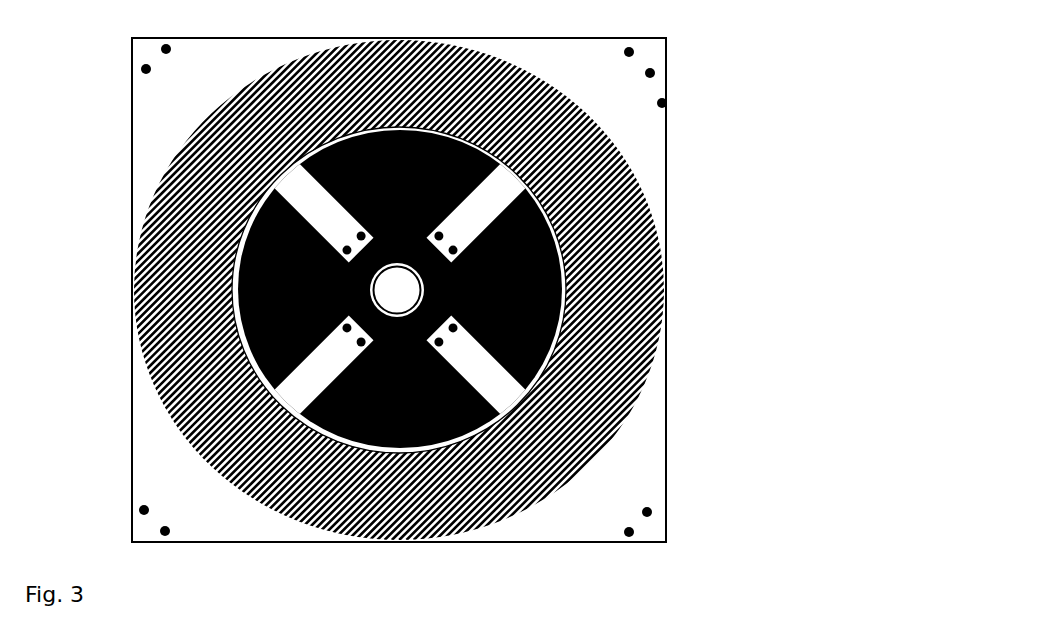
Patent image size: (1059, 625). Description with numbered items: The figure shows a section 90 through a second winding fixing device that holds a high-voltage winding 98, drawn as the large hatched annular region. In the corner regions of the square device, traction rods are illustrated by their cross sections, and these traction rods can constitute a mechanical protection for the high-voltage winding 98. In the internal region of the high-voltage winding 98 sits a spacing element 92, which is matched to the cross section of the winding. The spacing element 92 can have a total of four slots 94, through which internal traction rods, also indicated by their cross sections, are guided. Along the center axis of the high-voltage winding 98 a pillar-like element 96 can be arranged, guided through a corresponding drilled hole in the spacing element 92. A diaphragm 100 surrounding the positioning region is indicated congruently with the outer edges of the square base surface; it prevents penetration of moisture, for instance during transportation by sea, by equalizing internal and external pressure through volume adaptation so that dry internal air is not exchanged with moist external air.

The section 90 is at (428, 300).
The spacing element 92 is at (400, 289).
The slots 94 is at (400, 289).
The pillar-like element 96 is at (397, 290).
The high-voltage winding 98 is at (608, 172).
The diaphragm 100 is at (664, 103).